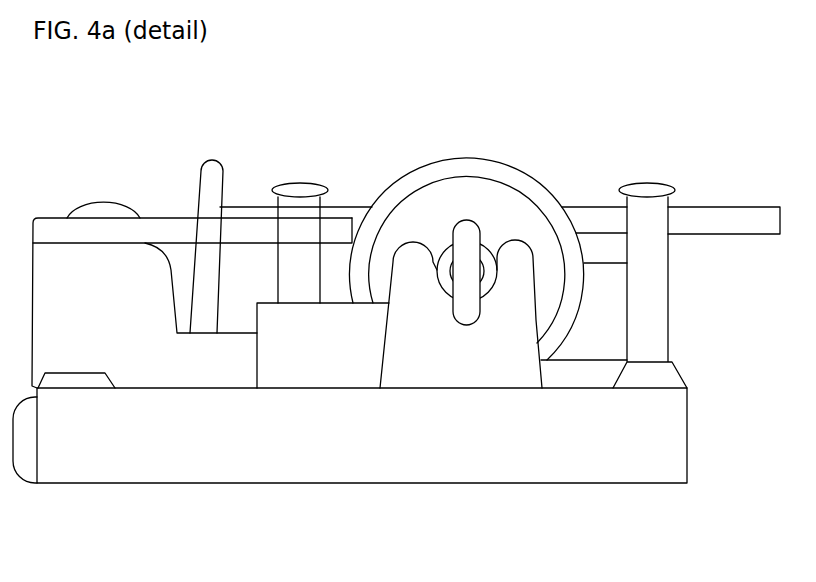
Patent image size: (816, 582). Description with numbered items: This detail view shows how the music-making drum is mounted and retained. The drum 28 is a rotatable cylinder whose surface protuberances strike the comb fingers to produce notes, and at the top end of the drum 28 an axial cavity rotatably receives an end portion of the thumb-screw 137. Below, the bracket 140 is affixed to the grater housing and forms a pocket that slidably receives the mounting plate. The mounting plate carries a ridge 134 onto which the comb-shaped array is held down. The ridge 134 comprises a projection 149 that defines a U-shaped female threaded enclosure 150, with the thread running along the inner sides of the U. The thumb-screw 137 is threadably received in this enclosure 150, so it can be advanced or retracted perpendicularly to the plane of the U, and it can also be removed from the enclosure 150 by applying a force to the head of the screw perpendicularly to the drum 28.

The drum 28 is at (478, 157).
The ridge 134 is at (290, 355).
The thumb-screw 137 is at (460, 222).
The bracket 140 is at (358, 455).
The projection 149 is at (493, 348).
The U-shaped female threaded enclosure 150 is at (445, 282).